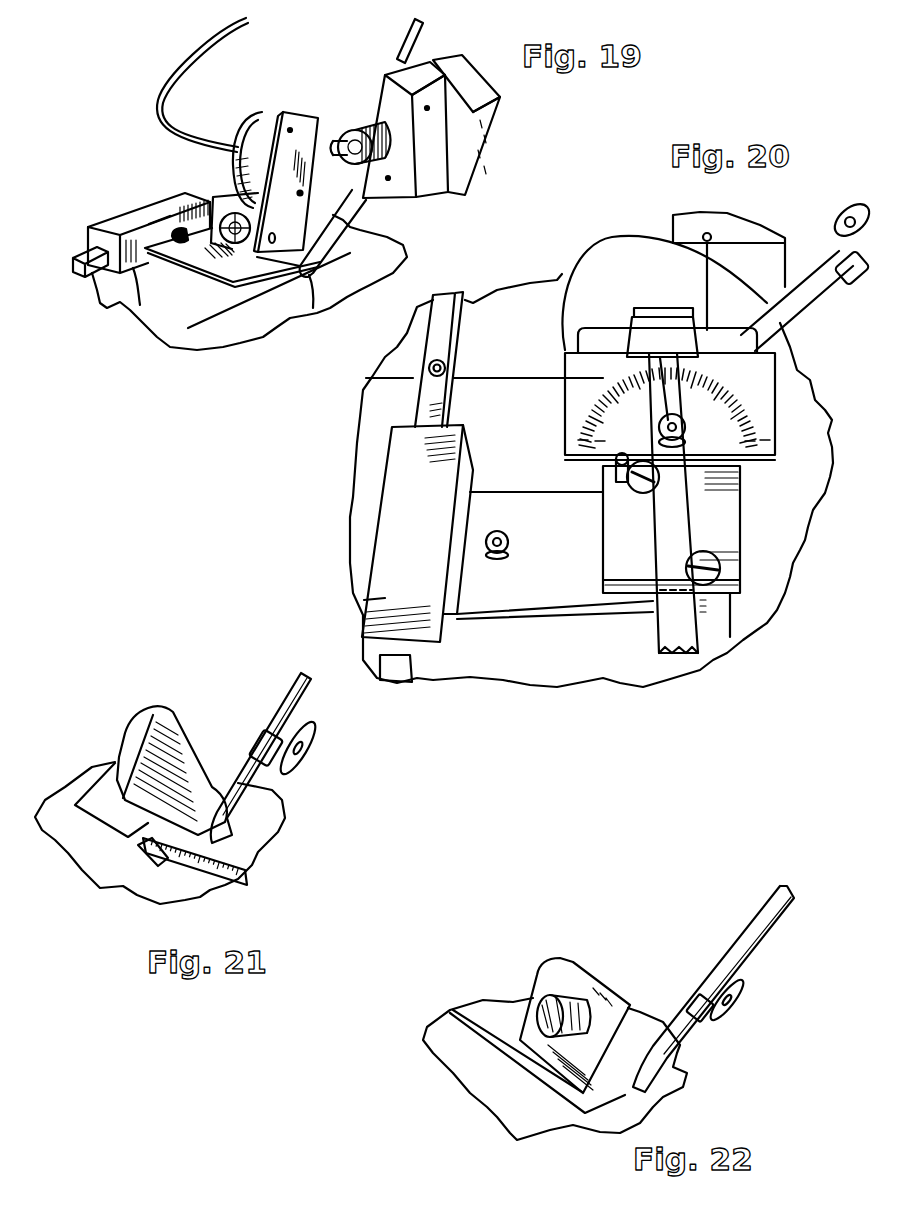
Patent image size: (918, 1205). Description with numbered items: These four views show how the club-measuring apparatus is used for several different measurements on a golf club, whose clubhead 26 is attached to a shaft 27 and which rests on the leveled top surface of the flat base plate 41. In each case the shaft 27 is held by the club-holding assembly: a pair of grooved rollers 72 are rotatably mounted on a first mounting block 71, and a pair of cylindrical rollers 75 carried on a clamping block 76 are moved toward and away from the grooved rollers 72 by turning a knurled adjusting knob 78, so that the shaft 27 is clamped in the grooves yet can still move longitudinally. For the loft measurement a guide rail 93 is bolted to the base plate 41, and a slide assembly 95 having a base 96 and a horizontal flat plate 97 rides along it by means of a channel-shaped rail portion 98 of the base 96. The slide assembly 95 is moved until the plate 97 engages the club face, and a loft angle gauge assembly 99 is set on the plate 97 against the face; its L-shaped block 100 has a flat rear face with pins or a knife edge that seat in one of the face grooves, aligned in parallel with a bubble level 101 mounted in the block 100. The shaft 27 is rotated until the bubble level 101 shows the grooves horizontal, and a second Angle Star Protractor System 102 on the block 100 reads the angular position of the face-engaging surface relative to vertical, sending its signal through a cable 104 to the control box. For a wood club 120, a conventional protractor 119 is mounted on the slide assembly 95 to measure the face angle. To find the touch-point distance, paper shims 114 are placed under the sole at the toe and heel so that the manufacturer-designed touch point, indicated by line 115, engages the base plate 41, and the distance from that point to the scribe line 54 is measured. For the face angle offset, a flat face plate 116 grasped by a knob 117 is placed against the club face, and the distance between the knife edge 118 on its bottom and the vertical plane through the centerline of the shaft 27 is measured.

In FIG. 19, the clubhead 26 is at (314, 309).
In FIG. 21, the clubhead 26 is at (167, 732).
In FIG. 19, the shaft 27 is at (432, 36).
In FIG. 20, the shaft 27 is at (673, 503).
In FIG. 21, the shaft 27 is at (313, 707).
In FIG. 22, the shaft 27 is at (757, 952).
In FIG. 19, the base plate 41 is at (141, 330).
In FIG. 20, the base plate 41 is at (591, 480).
In FIG. 21, the base plate 41 is at (277, 843).
In FIG. 22, the base plate 41 is at (460, 1053).
In FIG. 19, the scribe line 54 is at (208, 322).
In FIG. 21, the scribe line 54 is at (180, 882).
In FIG. 19, the first mounting block 71 is at (473, 125).
In FIG. 20, the grooved rollers 72 is at (848, 204).
In FIG. 21, the grooved rollers 72 is at (313, 758).
In FIG. 22, the grooved rollers 72 is at (730, 997).
In FIG. 20, the cylindrical rollers 75 is at (840, 280).
In FIG. 21, the cylindrical rollers 75 is at (256, 740).
In FIG. 22, the cylindrical rollers 75 is at (687, 993).
In FIG. 19, the clamping block 76 is at (380, 102).
In FIG. 19, the knurled adjusting knob 78 is at (385, 166).
In FIG. 19, the guide rail 93 is at (92, 278).
In FIG. 20, the guide rail 93 is at (431, 400).
In FIG. 19, the slide assembly 95 is at (152, 198).
In FIG. 20, the slide assembly 95 is at (372, 503).
In FIG. 19, the base 96 is at (140, 305).
In FIG. 20, the base 96 is at (383, 600).
In FIG. 19, the flat plate 97 is at (188, 253).
In FIG. 20, the flat plate 97 is at (540, 598).
In FIG. 19, the channel-shaped rail portion 98 is at (118, 211).
In FIG. 19, the loft angle gauge assembly 99 is at (289, 110).
In FIG. 19, the L-shaped block 100 is at (300, 217).
In FIG. 19, the bubble level 101 is at (237, 245).
In FIG. 19, the second Angle Star Protractor System 102 is at (258, 117).
In FIG. 19, the cable 104 is at (208, 50).
In FIG. 21, the paper shims 114 is at (130, 883).
In FIG. 21, the touch point line 115 is at (107, 797).
In FIG. 22, the flat face plate 116 is at (573, 972).
In FIG. 22, the knob 117 is at (540, 1007).
In FIG. 22, the knife edge 118 is at (500, 1113).
In FIG. 20, the protractor 119 is at (760, 378).
In FIG. 20, the wood club 120 is at (628, 248).